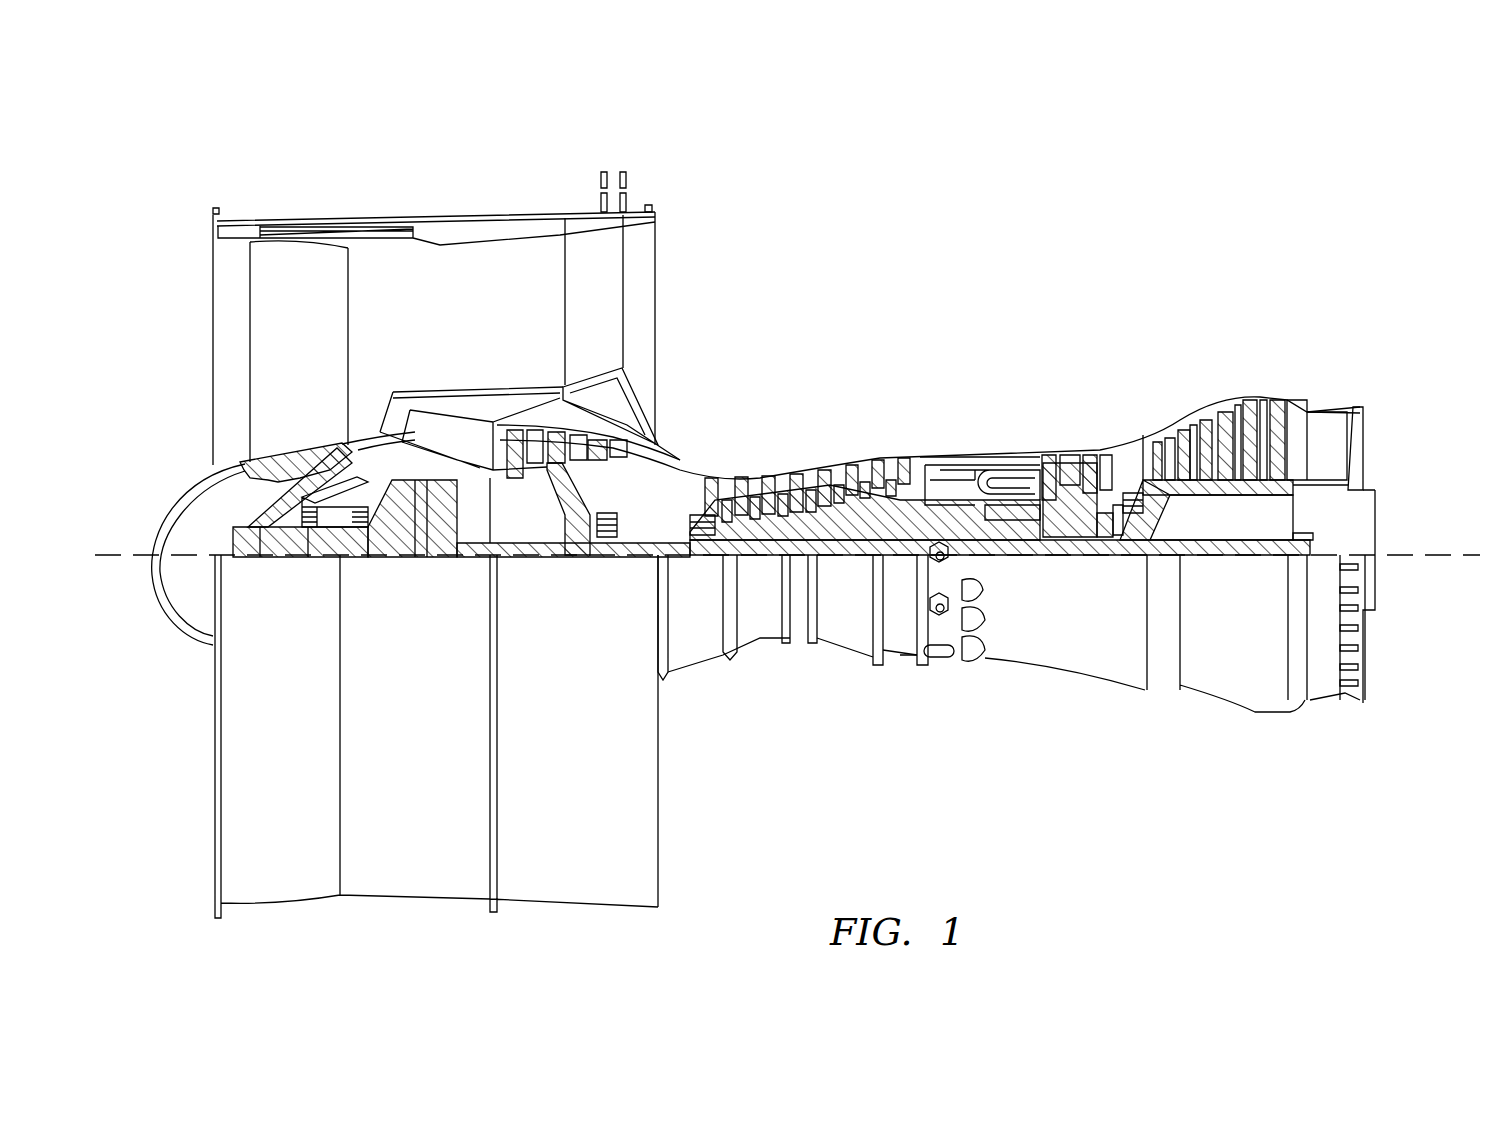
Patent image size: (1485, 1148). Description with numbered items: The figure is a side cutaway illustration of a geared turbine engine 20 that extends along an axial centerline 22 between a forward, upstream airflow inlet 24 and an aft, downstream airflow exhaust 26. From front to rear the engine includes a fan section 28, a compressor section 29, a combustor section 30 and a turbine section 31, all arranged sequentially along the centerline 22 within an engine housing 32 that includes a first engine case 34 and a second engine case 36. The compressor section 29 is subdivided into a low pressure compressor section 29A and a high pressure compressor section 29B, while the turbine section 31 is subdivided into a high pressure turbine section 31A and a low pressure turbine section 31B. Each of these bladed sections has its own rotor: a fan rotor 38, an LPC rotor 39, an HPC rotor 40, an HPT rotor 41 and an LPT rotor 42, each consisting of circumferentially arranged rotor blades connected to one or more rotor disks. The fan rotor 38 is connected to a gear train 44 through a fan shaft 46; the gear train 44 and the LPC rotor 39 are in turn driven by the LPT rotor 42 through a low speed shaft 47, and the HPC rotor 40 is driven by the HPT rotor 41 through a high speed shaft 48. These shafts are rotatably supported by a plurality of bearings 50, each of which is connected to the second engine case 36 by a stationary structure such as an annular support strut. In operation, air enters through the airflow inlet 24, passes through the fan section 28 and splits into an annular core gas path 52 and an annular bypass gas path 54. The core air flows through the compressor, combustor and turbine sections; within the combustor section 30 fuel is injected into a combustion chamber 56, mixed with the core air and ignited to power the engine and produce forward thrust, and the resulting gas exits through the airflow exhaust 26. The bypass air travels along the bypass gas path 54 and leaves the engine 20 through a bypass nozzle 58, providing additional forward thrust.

The geared turbine engine 20 is at (1200, 181).
The axial centerline 22 is at (1445, 548).
The airflow inlet 24 is at (213, 266).
The airflow exhaust 26 is at (1365, 440).
The fan section 28 is at (398, 192).
The compressor section 29 is at (900, 112).
The low pressure compressor (LPC) section 29A is at (655, 178).
The high pressure compressor (HPC) section 29B is at (900, 355).
The combustor section 30 is at (1035, 355).
The turbine section 31 is at (1320, 282).
The high pressure turbine (HPT) section 31A is at (1120, 355).
The low pressure turbine (LPT) section 31B is at (1320, 355).
The engine housing 32 is at (672, 695).
The first engine case 34 is at (598, 908).
The second engine case 36 is at (900, 662).
The fan rotor 38 is at (232, 472).
The LPC rotor 39 is at (550, 502).
The HPC rotor 40 is at (850, 505).
The HPT rotor 41 is at (1068, 527).
The LPT rotor 42 is at (1222, 490).
The gear train 44 is at (437, 557).
The fan shaft 46 is at (262, 557).
The low speed shaft 47 is at (1237, 557).
The high speed shaft 48 is at (992, 540).
The bearings 50 is at (330, 530).
The core gas path 52 is at (680, 470).
The bypass gas path 54 is at (492, 338).
The combustion chamber 56 is at (990, 482).
The bypass nozzle 58 is at (655, 282).